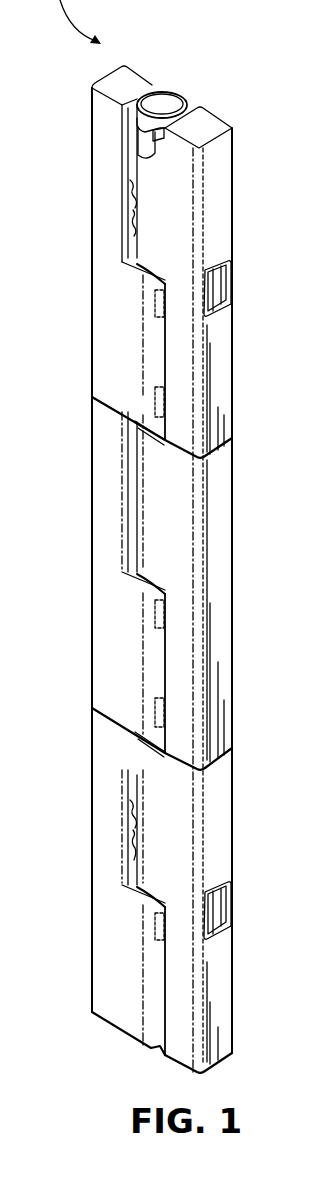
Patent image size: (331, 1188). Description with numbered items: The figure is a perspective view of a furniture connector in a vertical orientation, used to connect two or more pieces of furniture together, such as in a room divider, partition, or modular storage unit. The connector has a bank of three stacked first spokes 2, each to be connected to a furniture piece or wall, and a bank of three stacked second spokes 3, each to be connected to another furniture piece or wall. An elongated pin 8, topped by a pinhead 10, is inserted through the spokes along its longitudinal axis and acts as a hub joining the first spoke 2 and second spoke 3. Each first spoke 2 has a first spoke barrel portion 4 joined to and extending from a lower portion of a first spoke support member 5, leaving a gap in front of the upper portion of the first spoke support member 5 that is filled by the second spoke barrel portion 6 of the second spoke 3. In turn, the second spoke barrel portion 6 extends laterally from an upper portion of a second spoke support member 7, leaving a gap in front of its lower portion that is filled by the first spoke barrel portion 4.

The first spoke 2 is at (82, 165).
The second spoke 3 is at (222, 111).
The first spoke barrel portion 4 is at (153, 340).
The first spoke support member 5 is at (112, 252).
The second spoke barrel portion 6 is at (147, 215).
The second spoke support member 7 is at (180, 370).
The elongated pin 8 is at (178, 89).
The pinhead 10 is at (165, 93).